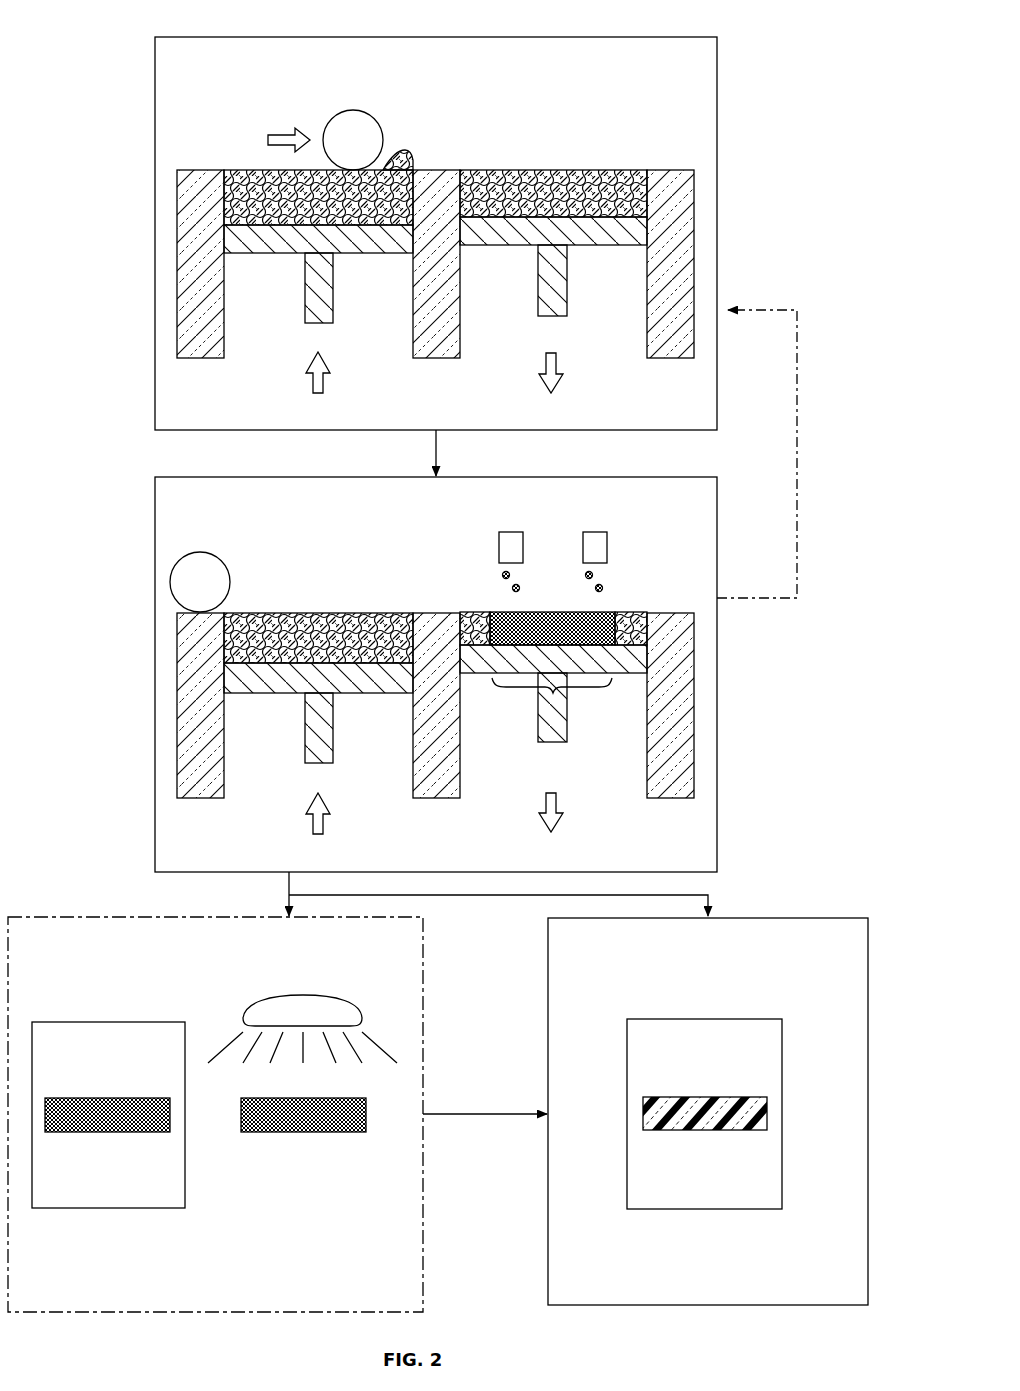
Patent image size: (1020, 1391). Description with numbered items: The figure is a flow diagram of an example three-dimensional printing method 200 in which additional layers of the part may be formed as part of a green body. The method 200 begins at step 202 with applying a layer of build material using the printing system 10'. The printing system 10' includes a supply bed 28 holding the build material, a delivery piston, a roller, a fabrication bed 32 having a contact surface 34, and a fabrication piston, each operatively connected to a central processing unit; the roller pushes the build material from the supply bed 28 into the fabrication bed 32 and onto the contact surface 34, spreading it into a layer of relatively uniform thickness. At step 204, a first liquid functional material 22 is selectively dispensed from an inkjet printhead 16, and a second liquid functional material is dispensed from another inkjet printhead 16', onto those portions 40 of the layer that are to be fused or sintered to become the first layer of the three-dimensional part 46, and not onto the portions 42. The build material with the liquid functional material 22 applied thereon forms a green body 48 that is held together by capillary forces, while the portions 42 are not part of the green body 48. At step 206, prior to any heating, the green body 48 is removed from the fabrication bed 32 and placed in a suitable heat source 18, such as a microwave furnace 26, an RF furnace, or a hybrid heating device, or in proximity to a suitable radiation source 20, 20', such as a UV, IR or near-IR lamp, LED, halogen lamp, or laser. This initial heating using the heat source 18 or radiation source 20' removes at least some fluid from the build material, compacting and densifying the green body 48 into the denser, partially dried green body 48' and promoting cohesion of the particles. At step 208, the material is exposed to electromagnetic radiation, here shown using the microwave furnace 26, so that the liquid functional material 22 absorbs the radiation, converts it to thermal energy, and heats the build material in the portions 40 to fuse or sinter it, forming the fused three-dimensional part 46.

The method 200 is at (95, 74).
The applying build material step 202 is at (718, 230).
The selectively applying liquid functional material step 204 is at (718, 670).
The heating green body step 206 is at (423, 1282).
The radiation exposure step 208 is at (828, 917).
The printing system 10' is at (436, 219).
The inkjet printhead 16 is at (537, 537).
The inkjet printhead 16' is at (624, 537).
The heat source 18 is at (108, 1021).
The sintering furnace 20 is at (673, 1101).
The radiation source 20' is at (302, 1007).
The liquid functional material 22 is at (521, 587).
The microwave furnace 26 is at (705, 1018).
The supply bed 28 is at (237, 171).
The fabrication bed 32 is at (473, 171).
The contact surface 34 is at (648, 205).
The portion 40 is at (552, 699).
The portions 42 is at (475, 609).
The 3D part 46 is at (669, 1096).
The green body 48 is at (531, 585).
The green body 48' is at (205, 1173).